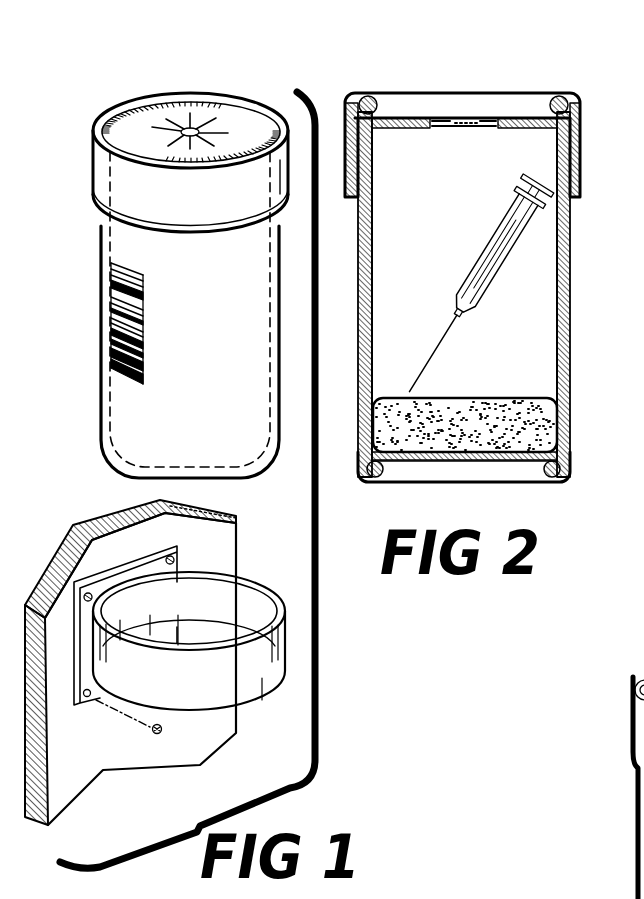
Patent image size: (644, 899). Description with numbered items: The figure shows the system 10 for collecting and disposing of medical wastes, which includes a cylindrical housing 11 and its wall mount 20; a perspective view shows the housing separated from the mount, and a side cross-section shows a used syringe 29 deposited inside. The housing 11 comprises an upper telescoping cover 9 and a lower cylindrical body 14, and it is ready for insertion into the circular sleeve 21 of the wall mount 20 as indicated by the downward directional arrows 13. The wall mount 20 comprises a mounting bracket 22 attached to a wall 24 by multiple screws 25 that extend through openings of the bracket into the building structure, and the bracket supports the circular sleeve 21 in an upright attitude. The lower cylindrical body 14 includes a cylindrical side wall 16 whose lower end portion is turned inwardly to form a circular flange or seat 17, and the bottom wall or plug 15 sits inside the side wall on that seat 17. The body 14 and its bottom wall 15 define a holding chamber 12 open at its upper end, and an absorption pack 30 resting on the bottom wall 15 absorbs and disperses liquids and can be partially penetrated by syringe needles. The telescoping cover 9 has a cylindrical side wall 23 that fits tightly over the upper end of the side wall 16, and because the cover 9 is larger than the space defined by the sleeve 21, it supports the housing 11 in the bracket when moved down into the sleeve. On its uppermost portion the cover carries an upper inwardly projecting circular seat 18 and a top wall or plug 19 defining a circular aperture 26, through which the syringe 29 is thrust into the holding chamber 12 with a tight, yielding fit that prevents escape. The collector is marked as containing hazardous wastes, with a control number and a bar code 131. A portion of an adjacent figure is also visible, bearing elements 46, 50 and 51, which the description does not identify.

In FIG. 1, the system for collecting and disposing of medical wastes 10 is at (146, 50).
In FIG. 1, the upper telescoping cover 9 is at (96, 165).
In FIG. 1, the cylindrical housing 11 is at (96, 322).
In FIG. 2, the cylindrical housing 11 is at (597, 397).
In FIG. 2, the holding chamber 12 is at (444, 260).
In FIG. 1, the downward directional arrows 13 is at (110, 557).
In FIG. 1, the lower cylindrical body 14 is at (115, 393).
In FIG. 2, the lower cylindrical body 14 is at (568, 315).
In FIG. 2, the bottom wall 15 is at (512, 462).
In FIG. 1, the cylindrical side wall 16 is at (100, 425).
In FIG. 2, the cylindrical side wall 16 is at (571, 225).
In FIG. 2, the circular flange or seat 17 is at (402, 478).
In FIG. 2, the upper inwardly projecting circular seat 18 is at (548, 100).
In FIG. 2, the top wall 19 is at (405, 120).
In FIG. 1, the wall mount 20 is at (289, 590).
In FIG. 1, the circular sleeve 21 is at (243, 693).
In FIG. 1, the mounting bracket 22 is at (178, 556).
In FIG. 1, the cylindrical side wall of cover 23 is at (281, 198).
In FIG. 2, the cylindrical side wall of cover 23 is at (578, 140).
In FIG. 1, the wall 24 is at (36, 580).
In FIG. 1, the screws 25 is at (145, 728).
In FIG. 2, the circular aperture 26 is at (465, 120).
In FIG. 2, the used syringe 29 is at (468, 300).
In FIG. 2, the absorption pack 30 is at (518, 398).
In FIG. 2, the fragment element 46 is at (630, 663).
In FIG. 2, the fragment element 50 is at (620, 854).
In FIG. 2, the fragment element 51 is at (632, 690).
In FIG. 1, the bar code 131 is at (110, 290).